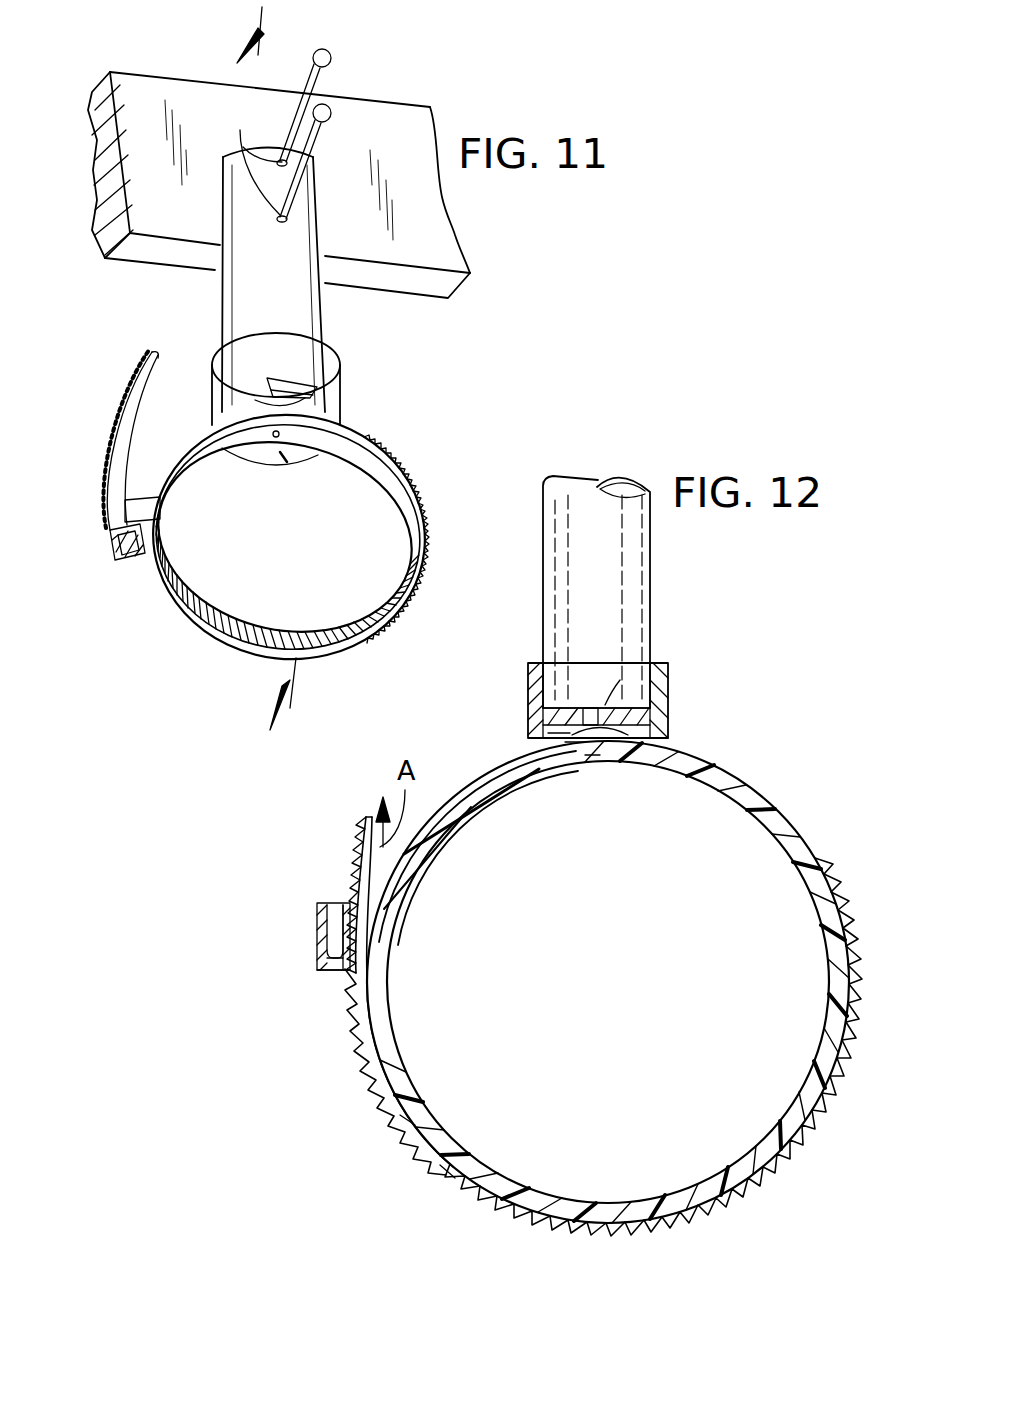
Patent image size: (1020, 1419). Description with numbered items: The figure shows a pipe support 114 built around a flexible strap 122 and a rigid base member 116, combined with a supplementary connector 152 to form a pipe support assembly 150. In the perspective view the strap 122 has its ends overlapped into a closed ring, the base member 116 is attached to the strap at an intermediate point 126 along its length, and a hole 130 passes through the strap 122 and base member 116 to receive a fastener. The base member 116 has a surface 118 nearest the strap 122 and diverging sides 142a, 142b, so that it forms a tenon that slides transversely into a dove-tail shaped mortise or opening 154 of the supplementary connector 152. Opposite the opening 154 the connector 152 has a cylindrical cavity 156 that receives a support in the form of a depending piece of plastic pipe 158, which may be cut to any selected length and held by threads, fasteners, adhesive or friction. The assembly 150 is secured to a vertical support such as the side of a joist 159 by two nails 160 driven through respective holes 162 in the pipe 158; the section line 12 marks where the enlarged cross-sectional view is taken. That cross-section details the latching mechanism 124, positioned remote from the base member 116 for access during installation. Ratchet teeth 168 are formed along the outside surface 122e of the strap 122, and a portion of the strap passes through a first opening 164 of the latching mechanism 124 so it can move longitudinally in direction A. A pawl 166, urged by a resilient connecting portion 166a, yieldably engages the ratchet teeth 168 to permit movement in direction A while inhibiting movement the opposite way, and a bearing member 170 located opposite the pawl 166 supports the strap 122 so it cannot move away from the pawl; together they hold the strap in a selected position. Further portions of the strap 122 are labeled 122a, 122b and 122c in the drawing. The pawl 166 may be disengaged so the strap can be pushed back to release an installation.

In FIG. 11, the section line 12 is at (281, 365).
In FIG. 12, the fastening band assembly 114 is at (447, 1172).
In FIG. 11, the base member 116 is at (284, 458).
In FIG. 12, the base member 116 is at (572, 745).
In FIG. 11, the surface 118 is at (283, 402).
In FIG. 11, the flexible strap 122 is at (223, 640).
In FIG. 12, the flexible strap 122 is at (372, 1080).
In FIG. 12, the band first end 122a is at (365, 826).
In FIG. 12, the band inner layer 122b is at (390, 893).
In FIG. 12, the band outer serrated surface 122c is at (807, 1143).
In FIG. 11, the outside surface 122e is at (197, 613).
In FIG. 12, the outside surface 122e is at (408, 1137).
In FIG. 11, the latching mechanism 124 is at (113, 565).
In FIG. 12, the latching mechanism 124 is at (310, 953).
In FIG. 12, the intermediate point 126 is at (592, 755).
In FIG. 11, the hole 130 is at (275, 440).
In FIG. 12, the hole 130 is at (600, 705).
In FIG. 12, the diverging side 142a is at (548, 731).
In FIG. 12, the diverging side 142b is at (613, 735).
In FIG. 11, the pipe support assembly 150 is at (368, 386).
In FIG. 12, the pipe support assembly 150 is at (767, 715).
In FIG. 11, the supplementary connector 152 is at (343, 406).
In FIG. 12, the supplementary connector 152 is at (667, 702).
In FIG. 11, the opening 154 is at (300, 383).
In FIG. 12, the opening 154 is at (615, 733).
In FIG. 12, the cavity 156 is at (595, 702).
In FIG. 11, the piece of pipe 158 is at (233, 318).
In FIG. 12, the piece of pipe 158 is at (642, 560).
In FIG. 11, the joist 159 is at (418, 223).
In FIG. 11, the nails 160 is at (318, 90).
In FIG. 11, the holes 162 is at (251, 158).
In FIG. 12, the first opening 164 is at (347, 962).
In FIG. 12, the pawl 166 is at (336, 907).
In FIG. 12, the resilient connecting portion 166a is at (332, 962).
In FIG. 11, the ratchet teeth 168 is at (117, 413).
In FIG. 12, the ratchet teeth 168 is at (362, 850).
In FIG. 12, the bearing member 170 is at (383, 935).